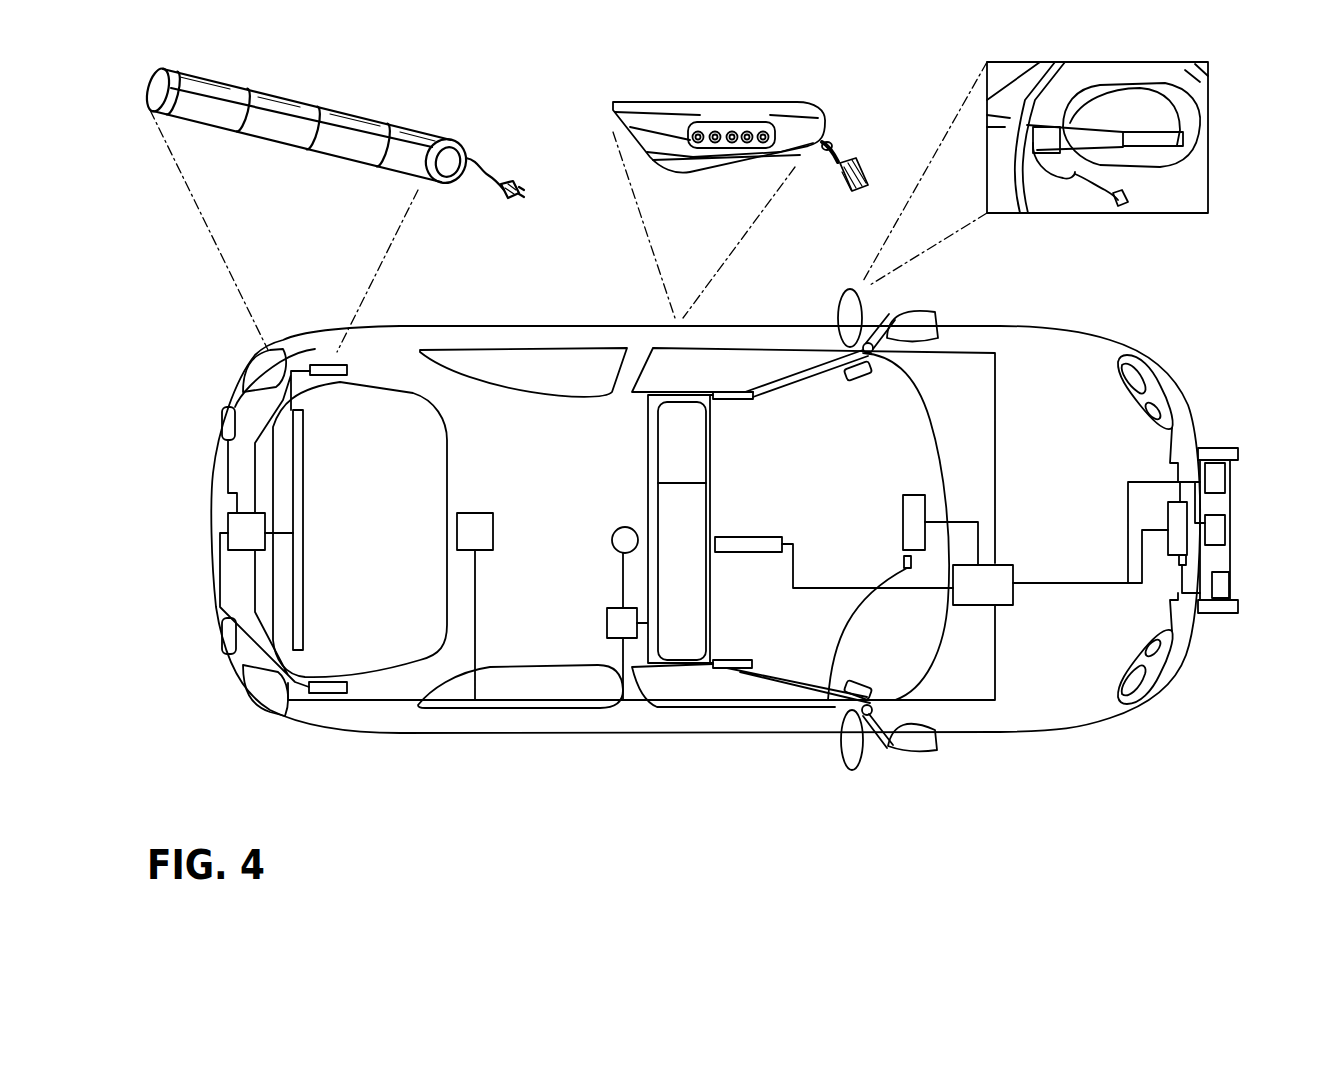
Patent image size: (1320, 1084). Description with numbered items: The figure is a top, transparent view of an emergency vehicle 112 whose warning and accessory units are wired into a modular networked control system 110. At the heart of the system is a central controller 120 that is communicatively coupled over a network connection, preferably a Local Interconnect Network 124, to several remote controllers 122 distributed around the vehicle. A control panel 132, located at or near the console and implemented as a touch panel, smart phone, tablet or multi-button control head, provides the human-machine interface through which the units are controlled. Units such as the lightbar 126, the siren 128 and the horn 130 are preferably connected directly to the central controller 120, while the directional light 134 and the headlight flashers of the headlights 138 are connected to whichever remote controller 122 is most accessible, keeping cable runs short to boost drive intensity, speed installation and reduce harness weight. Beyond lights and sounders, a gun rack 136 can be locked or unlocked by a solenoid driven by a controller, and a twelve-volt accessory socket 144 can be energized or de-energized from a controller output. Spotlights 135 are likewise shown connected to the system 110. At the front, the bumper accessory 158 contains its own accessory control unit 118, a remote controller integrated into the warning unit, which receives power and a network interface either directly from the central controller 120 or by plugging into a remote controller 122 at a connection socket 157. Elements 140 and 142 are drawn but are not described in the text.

The modular networked control system 110 is at (1022, 612).
The emergency vehicle 112 is at (530, 320).
The accessory control unit 118 is at (1222, 587).
The central controller 120 is at (997, 593).
The remote controllers 122 is at (472, 515).
The Local Interconnect Network (LIN) 124 is at (638, 704).
The lightbar 126 is at (685, 630).
The siren 128 is at (1222, 478).
The horn 130 is at (1218, 522).
The control panel 132 is at (907, 494).
The directional light 134 is at (300, 425).
The spotlights 135 is at (917, 322).
The gun rack 136 is at (762, 537).
The headlights / headlight flashers 138 is at (1152, 402).
The indicator 140 is at (622, 535).
The light emitting unit 142 is at (320, 366).
The 12-volt accessory socket 144 is at (828, 700).
The connection socket 157 is at (1185, 557).
The bumper accessory 158 is at (1250, 486).